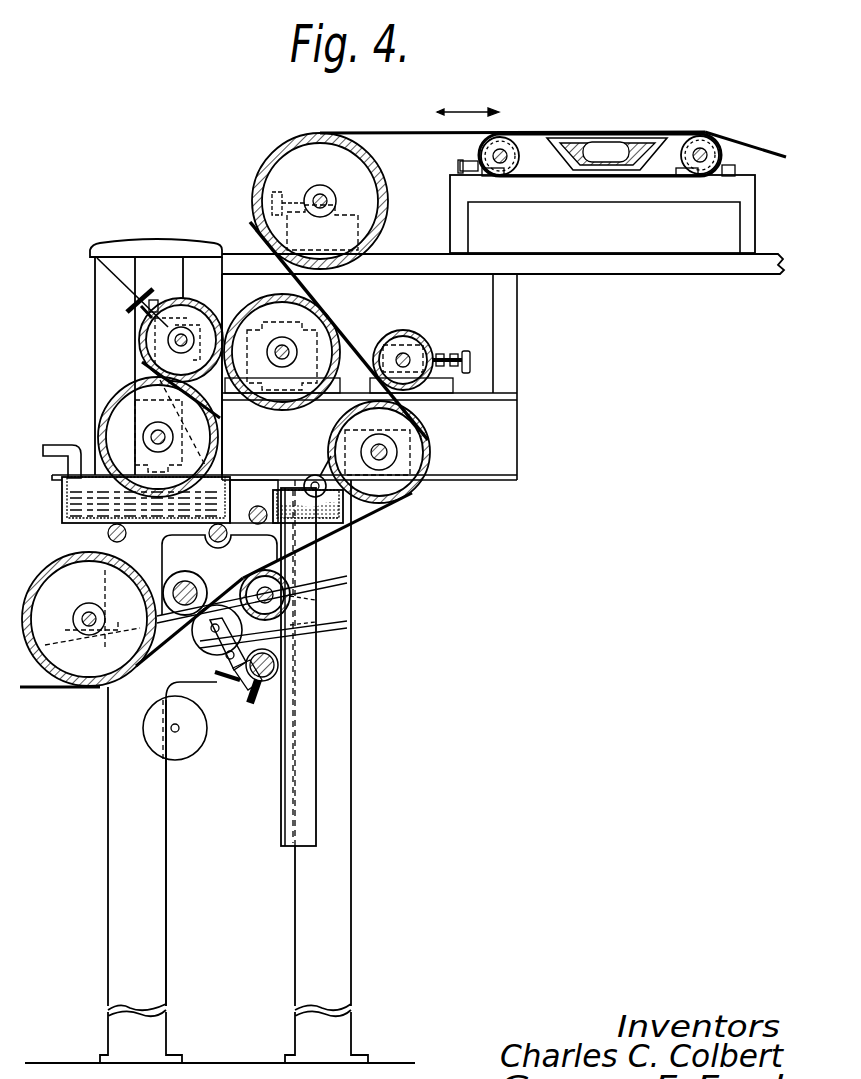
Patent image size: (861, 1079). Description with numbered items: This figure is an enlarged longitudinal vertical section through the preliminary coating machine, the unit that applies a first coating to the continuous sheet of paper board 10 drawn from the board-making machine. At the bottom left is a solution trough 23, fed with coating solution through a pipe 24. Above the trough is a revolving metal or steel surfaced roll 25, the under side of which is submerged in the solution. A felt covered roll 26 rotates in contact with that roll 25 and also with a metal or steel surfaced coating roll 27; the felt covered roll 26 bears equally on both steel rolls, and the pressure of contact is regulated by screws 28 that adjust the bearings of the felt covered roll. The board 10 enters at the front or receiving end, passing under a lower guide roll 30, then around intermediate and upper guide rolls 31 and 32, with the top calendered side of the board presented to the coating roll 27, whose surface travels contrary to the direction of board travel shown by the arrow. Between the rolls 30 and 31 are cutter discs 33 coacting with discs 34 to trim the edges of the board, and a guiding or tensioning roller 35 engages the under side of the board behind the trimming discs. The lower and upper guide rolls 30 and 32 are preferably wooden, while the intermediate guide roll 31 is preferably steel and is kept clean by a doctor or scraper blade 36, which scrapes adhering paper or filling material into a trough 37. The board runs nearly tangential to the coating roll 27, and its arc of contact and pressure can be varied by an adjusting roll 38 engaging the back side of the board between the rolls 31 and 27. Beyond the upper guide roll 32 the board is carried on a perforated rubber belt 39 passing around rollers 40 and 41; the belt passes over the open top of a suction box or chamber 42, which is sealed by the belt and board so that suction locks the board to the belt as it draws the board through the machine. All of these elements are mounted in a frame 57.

The continuous sheet of paper board 10 is at (350, 342).
The solution trough 23 is at (63, 513).
The pipe 24 is at (66, 467).
The revolving metal or steel surfaced roll 25 is at (97, 413).
The felt covered roll 26 is at (140, 343).
The metal or steel surfaced coating roll 27 is at (263, 297).
The screws 28 is at (157, 300).
The guide roll 30 is at (42, 667).
The guide roll 31 is at (412, 493).
The guide roll 32 is at (377, 168).
The cutter discs 33 is at (200, 640).
The discs 34 is at (199, 583).
The guiding or tensioning roller 35 is at (292, 585).
The doctor or scraper blade 36 is at (311, 467).
The trough 37 is at (278, 501).
The adjusting roll 38 is at (420, 337).
The perforated rubber belt 39 is at (533, 137).
The roller 40 is at (501, 171).
The roller 41 is at (704, 172).
The suction box or chamber 42 is at (653, 171).
The frame 57 is at (345, 734).